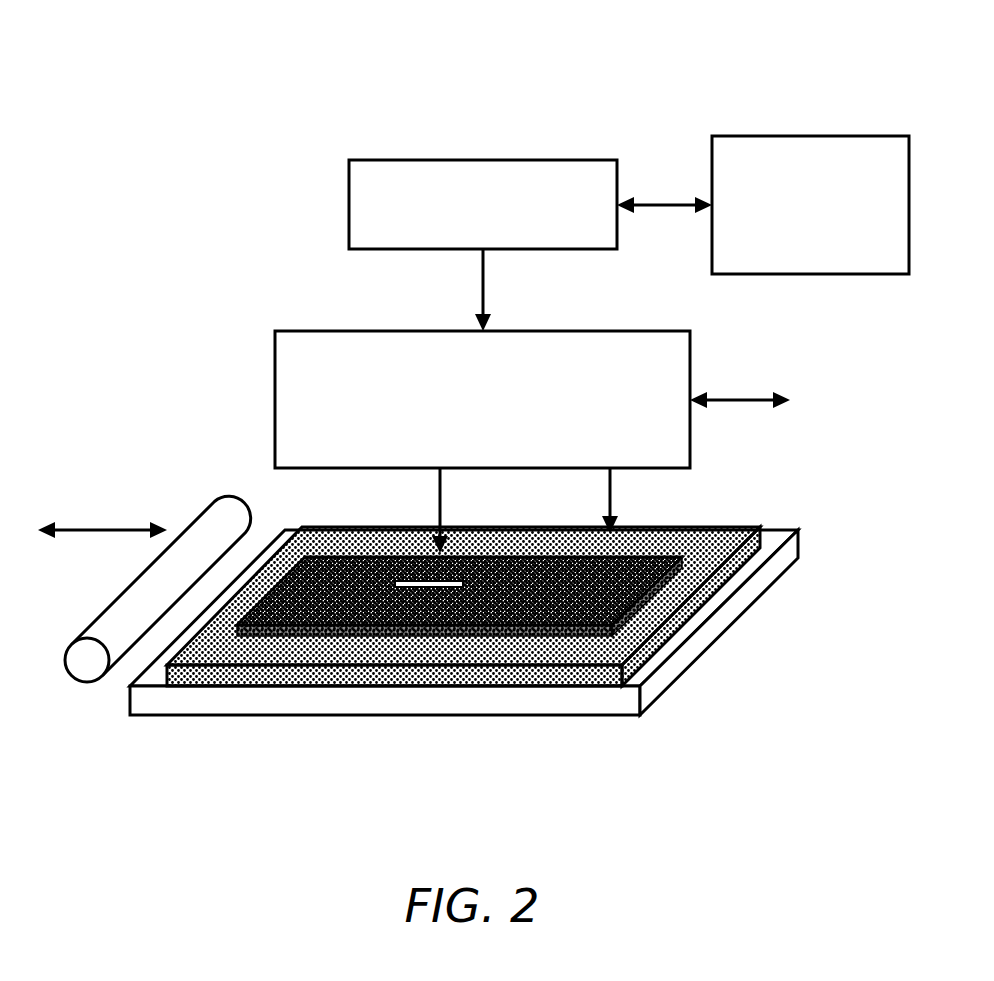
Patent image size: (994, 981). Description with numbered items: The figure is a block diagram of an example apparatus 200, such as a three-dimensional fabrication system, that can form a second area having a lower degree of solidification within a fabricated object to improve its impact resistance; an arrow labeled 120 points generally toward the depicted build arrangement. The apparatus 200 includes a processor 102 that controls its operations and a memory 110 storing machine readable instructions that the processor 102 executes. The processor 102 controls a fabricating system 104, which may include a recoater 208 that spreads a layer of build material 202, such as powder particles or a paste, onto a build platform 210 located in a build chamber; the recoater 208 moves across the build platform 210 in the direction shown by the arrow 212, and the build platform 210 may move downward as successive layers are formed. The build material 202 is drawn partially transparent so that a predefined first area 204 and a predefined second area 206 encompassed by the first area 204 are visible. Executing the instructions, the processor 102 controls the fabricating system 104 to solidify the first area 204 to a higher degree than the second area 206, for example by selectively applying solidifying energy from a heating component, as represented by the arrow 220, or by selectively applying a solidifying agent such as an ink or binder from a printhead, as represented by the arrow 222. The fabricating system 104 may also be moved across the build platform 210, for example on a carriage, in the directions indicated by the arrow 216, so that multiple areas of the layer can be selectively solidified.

The apparatus 200 is at (462, 68).
The processor 102 is at (462, 233).
The memory 110 is at (832, 230).
The fabricating system 104 is at (462, 425).
The build platform assembly 120 is at (187, 274).
The arrow 216 is at (745, 400).
The arrow 212 is at (82, 528).
The recoater 208 is at (88, 683).
The arrow 220 is at (438, 503).
The arrow 222 is at (608, 497).
The build material 202 is at (663, 627).
The first area 204 is at (487, 627).
The second area 206 is at (412, 591).
The build platform 210 is at (525, 717).